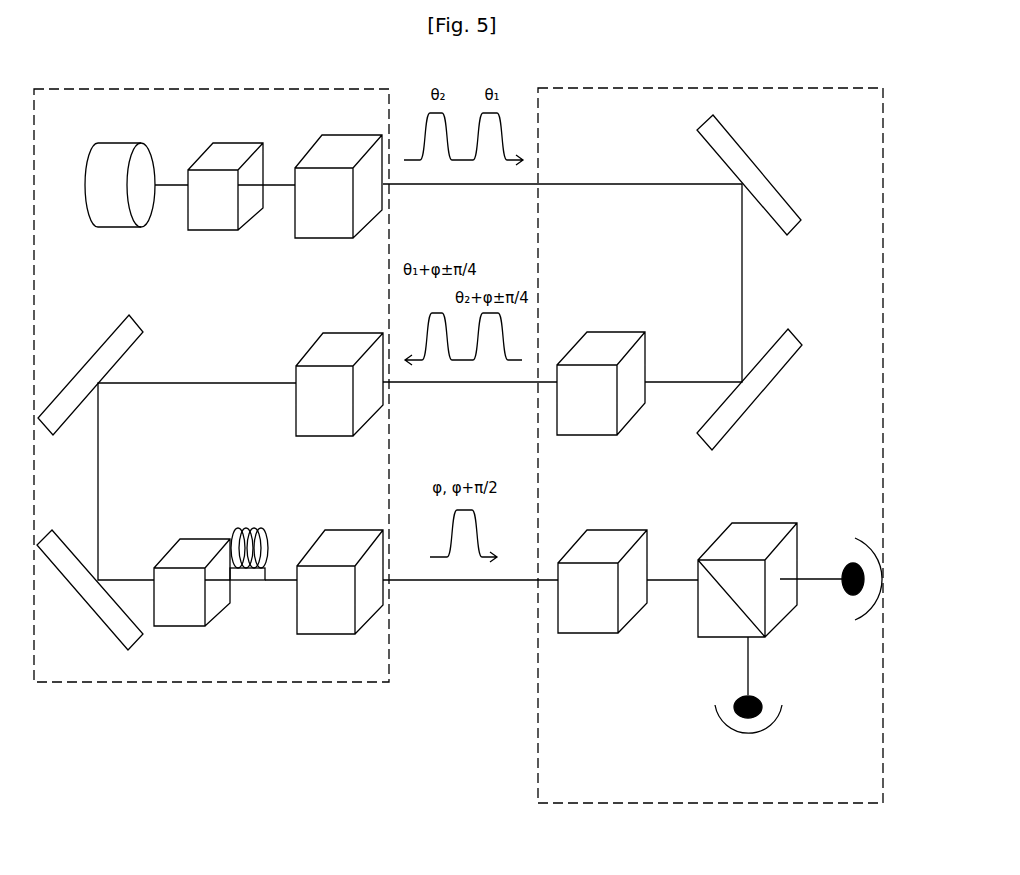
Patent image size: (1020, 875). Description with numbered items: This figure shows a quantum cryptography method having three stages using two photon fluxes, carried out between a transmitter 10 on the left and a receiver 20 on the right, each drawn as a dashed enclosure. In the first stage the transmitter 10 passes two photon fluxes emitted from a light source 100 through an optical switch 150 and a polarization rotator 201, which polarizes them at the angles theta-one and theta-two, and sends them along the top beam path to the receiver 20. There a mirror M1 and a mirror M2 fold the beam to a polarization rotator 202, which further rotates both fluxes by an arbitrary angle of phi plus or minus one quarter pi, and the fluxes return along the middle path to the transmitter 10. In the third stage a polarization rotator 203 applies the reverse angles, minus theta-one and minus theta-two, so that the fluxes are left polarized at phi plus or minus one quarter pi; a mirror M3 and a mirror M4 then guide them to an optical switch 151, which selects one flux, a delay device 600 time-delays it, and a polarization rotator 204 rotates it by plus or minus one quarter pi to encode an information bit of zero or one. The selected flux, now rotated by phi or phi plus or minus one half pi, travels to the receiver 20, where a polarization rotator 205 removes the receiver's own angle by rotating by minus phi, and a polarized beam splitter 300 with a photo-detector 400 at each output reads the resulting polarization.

The transmitter 10 is at (211, 366).
The receiver 20 is at (710, 427).
The light source 100 is at (120, 172).
The optical switch 150 is at (225, 174).
The optical switch 151 is at (192, 570).
The polarization rotator 201 is at (338, 175).
The polarization rotator 202 is at (601, 371).
The polarization rotator 203 is at (339, 373).
The polarization rotator 204 is at (340, 574).
The polarization rotator 205 is at (602, 572).
The polarized beam splitter 300 is at (747, 569).
The photo-detector 400 is at (798, 651).
The delay device 600 is at (249, 541).
The mirror M1 is at (749, 175).
The mirror M2 is at (749, 389).
The mirror M3 is at (90, 375).
The mirror M4 is at (90, 590).